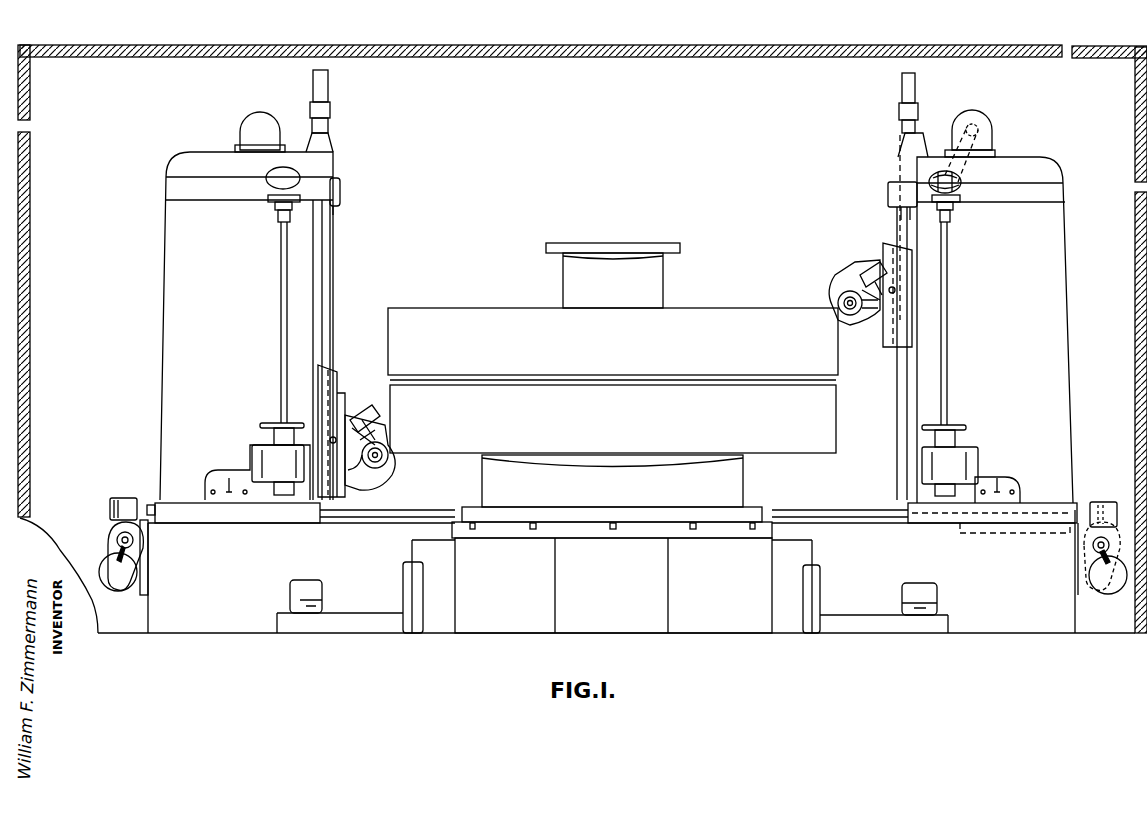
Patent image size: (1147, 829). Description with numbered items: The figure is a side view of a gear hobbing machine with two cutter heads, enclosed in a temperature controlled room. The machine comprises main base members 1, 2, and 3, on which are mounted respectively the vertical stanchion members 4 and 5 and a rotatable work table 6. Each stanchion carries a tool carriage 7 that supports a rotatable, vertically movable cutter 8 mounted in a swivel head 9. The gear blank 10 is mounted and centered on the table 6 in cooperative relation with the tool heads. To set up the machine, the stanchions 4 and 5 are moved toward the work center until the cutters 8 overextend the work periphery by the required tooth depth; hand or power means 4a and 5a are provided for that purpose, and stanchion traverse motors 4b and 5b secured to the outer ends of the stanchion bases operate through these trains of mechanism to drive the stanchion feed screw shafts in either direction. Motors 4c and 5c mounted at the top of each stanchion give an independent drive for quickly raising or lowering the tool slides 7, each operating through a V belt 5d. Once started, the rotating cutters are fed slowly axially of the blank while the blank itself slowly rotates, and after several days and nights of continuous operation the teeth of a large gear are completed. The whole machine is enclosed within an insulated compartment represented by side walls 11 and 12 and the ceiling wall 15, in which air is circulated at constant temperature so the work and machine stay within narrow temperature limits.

The main base member 1 is at (301, 568).
The main base member 2 is at (924, 568).
The main base member 3 is at (613, 585).
The vertical stanchion member 4 is at (250, 285).
The hand or power means 4a is at (118, 497).
The stanchion traverse motor 4b is at (137, 578).
The motor 4c is at (238, 128).
The vertical stanchion member 5 is at (980, 288).
The hand or power means 5a is at (1097, 500).
The stanchion traverse motor 5b is at (1086, 580).
The motor 5c is at (993, 142).
The V belt 5d is at (962, 180).
The rotatable work table 6 is at (512, 528).
The tool carriage 7 is at (338, 378).
The cutter 8 is at (383, 465).
The swivel head 9 is at (360, 408).
The gear blank 10 is at (718, 318).
The side wall 11 is at (30, 298).
The side wall 12 is at (1134, 328).
The ceiling wall 15 is at (155, 57).